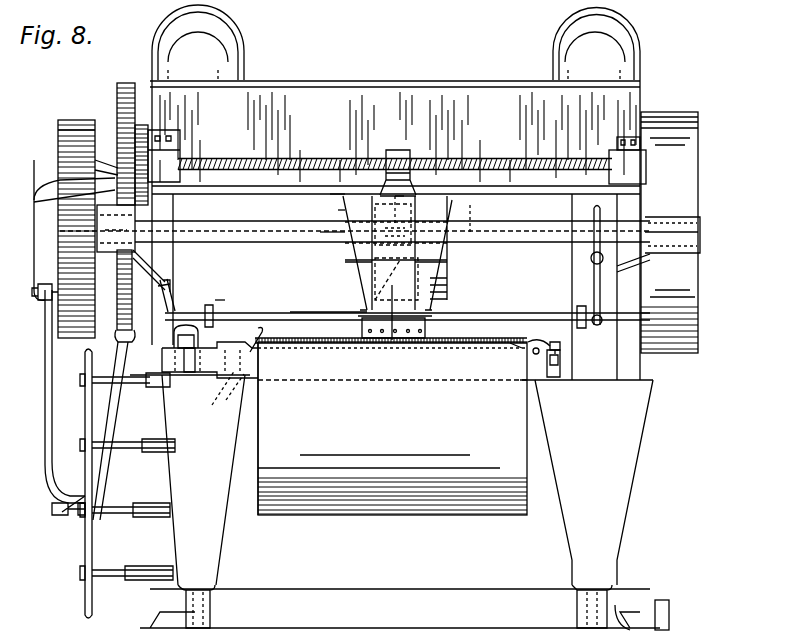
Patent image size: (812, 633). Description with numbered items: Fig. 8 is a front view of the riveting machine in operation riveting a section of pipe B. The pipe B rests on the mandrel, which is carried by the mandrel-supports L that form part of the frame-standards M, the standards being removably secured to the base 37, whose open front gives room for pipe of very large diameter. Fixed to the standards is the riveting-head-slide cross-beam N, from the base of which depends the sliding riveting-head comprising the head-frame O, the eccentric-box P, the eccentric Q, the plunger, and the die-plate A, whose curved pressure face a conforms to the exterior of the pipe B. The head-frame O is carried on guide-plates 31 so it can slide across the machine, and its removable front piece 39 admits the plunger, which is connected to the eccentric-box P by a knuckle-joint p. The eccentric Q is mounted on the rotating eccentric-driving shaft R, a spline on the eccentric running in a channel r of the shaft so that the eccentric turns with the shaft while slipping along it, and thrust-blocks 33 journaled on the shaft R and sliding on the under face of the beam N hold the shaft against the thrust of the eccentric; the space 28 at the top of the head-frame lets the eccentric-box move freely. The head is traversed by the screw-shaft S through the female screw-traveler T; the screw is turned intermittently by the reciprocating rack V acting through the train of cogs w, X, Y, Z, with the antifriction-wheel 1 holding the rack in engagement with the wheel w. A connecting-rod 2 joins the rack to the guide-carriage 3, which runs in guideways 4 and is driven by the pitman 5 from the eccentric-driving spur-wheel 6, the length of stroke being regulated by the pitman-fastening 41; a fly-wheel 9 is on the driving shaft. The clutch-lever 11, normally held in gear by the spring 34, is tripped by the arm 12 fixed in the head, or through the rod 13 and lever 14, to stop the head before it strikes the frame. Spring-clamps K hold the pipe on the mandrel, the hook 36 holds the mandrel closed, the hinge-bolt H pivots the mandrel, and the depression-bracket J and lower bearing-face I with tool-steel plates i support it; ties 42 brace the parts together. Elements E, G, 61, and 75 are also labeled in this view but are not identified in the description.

The riveting-head-slide cross-beam N is at (401, 230).
The frame-standards M is at (396, 42).
The screw-shaft S is at (292, 166).
The female screw-traveler T is at (403, 157).
The thrust-blocks 33 is at (345, 210).
The space at top of head-frame 28 is at (412, 210).
The guide-plates 31 is at (340, 198).
The base 37 is at (524, 190).
The tie 42 is at (450, 212).
The cog Z is at (80, 147).
The eccentric-driving spur-wheel 6 is at (68, 130).
The antifriction-wheel 1 is at (110, 162).
The cog-wheel w is at (34, 200).
The reciprocating rack V is at (126, 85).
The cog X is at (141, 125).
The cog Y is at (175, 157).
The eccentric-driving shaft R is at (260, 242).
The eccentric Q is at (335, 214).
The channel r is at (470, 250).
The rod 75 is at (470, 214).
The die-plate A is at (428, 325).
The head-frame O is at (400, 240).
The eccentric-box P is at (408, 234).
The knuckle-joint p is at (375, 292).
The arm 12 is at (352, 312).
The removable front piece 39 is at (396, 343).
The pressure face a is at (362, 343).
The pawl G is at (508, 333).
The rod 13 is at (236, 315).
The spring-clamp K is at (262, 322).
The spring 34 is at (178, 306).
The clutch-lever 11 is at (152, 276).
The pitman-fastening 41 is at (40, 300).
The depression-bracket J is at (174, 342).
The hinge-bolt H is at (194, 485).
The lower bearing-face I is at (240, 352).
The tool-steel plates i is at (375, 400).
The box wall E is at (262, 380).
The pipe B is at (392, 428).
The mandrel-supports L is at (421, 504).
The pitman 5 is at (45, 432).
The guideways 4 is at (85, 550).
The connecting-rod 2 is at (114, 407).
The guide-carriage 3 is at (75, 515).
The bolts 61 is at (562, 368).
The hook 36 is at (562, 348).
The fly-wheel 9 is at (658, 232).
The lever 14 is at (594, 278).